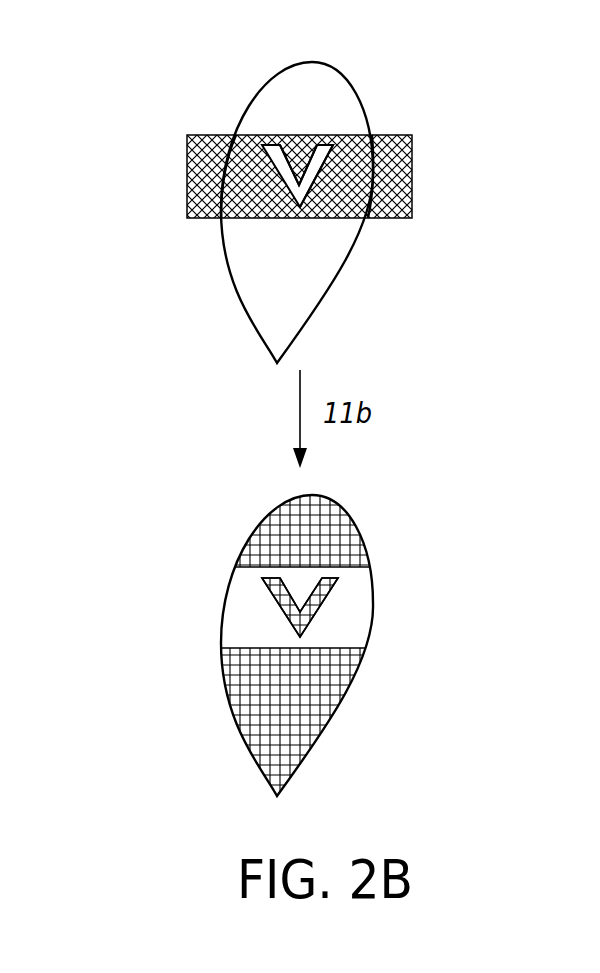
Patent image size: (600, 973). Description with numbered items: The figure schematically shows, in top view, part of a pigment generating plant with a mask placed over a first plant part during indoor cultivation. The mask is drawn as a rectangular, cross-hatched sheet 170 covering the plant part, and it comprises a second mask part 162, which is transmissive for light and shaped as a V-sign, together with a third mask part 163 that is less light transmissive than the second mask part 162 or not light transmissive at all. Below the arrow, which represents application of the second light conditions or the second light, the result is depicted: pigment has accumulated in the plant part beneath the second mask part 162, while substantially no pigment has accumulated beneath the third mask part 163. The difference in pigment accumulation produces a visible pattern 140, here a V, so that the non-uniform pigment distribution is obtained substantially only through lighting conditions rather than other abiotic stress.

The pattern 140 is at (265, 602).
The second mask part 162 is at (313, 188).
The third mask part 163 is at (313, 145).
The film/sheet with mesh 170 is at (152, 175).